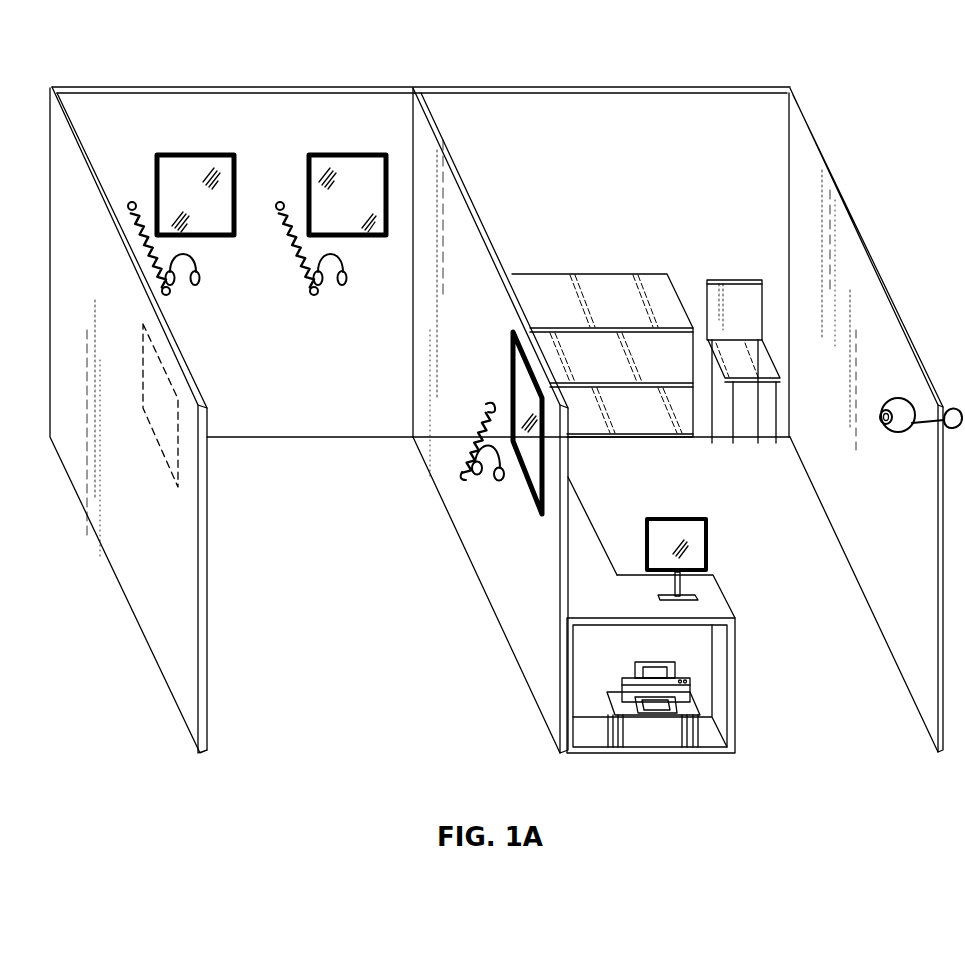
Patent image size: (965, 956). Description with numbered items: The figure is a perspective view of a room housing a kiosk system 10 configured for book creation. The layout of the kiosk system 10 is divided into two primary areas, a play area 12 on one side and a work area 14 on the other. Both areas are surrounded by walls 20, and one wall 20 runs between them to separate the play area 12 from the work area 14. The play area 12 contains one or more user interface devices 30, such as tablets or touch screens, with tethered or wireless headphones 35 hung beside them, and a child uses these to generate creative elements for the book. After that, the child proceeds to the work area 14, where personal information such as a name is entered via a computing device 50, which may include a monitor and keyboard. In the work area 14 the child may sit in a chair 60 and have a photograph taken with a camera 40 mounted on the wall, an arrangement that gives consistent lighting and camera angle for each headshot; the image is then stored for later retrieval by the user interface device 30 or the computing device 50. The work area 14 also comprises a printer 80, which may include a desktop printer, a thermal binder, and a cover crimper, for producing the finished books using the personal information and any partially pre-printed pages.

The kiosk system 10 is at (822, 62).
The play area 12 is at (388, 688).
The work area 14 is at (804, 634).
The wall 20 is at (495, 587).
The user interface device 30 is at (530, 485).
The headphones 35 is at (480, 430).
The camera 40 is at (882, 421).
The computing device 50 is at (677, 517).
The chair 60 is at (735, 280).
The printer 80 is at (640, 753).